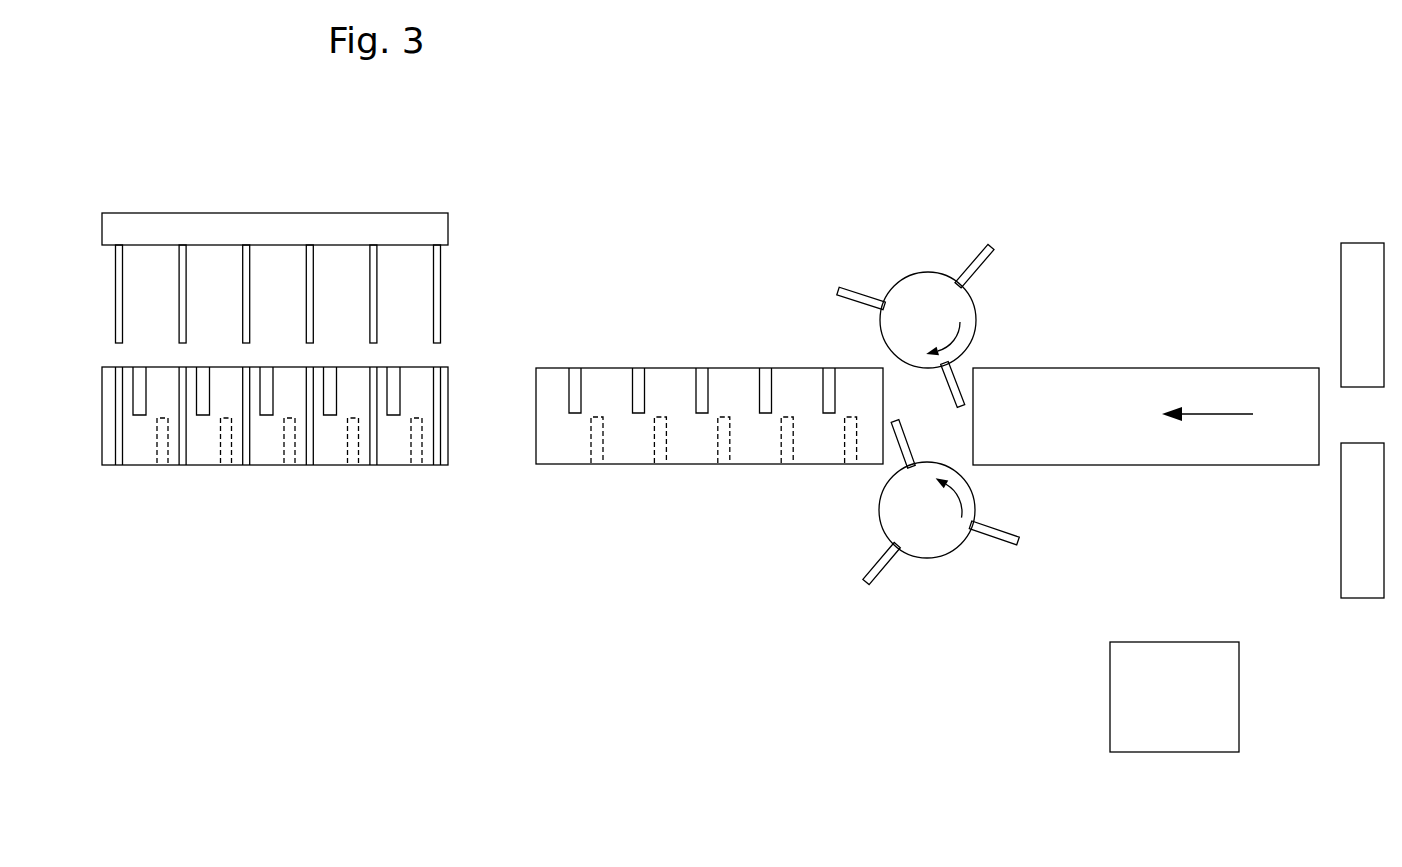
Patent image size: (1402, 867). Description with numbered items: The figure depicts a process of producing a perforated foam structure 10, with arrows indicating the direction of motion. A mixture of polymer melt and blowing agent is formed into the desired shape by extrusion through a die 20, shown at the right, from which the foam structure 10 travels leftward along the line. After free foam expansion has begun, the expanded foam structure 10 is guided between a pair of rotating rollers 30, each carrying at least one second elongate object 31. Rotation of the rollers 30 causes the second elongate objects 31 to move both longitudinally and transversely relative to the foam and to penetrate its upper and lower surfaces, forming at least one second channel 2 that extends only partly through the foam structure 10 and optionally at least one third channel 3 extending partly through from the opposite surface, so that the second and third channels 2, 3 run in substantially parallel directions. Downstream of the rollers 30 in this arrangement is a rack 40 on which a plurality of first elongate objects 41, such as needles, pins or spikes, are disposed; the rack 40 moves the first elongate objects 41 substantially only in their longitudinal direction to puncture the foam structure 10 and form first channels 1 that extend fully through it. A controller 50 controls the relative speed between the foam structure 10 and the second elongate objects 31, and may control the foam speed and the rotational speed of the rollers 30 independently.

The first channel 1 is at (185, 438).
The second channel 2 is at (268, 406).
The third channel 3 is at (354, 452).
The foam structure 10 is at (442, 473).
The die 20 is at (1334, 230).
The rotating roller 30 is at (929, 260).
The second elongate object 31 is at (987, 545).
The rack 40 is at (376, 200).
The first elongate object 41 is at (442, 291).
The controller 50 is at (1174, 697).